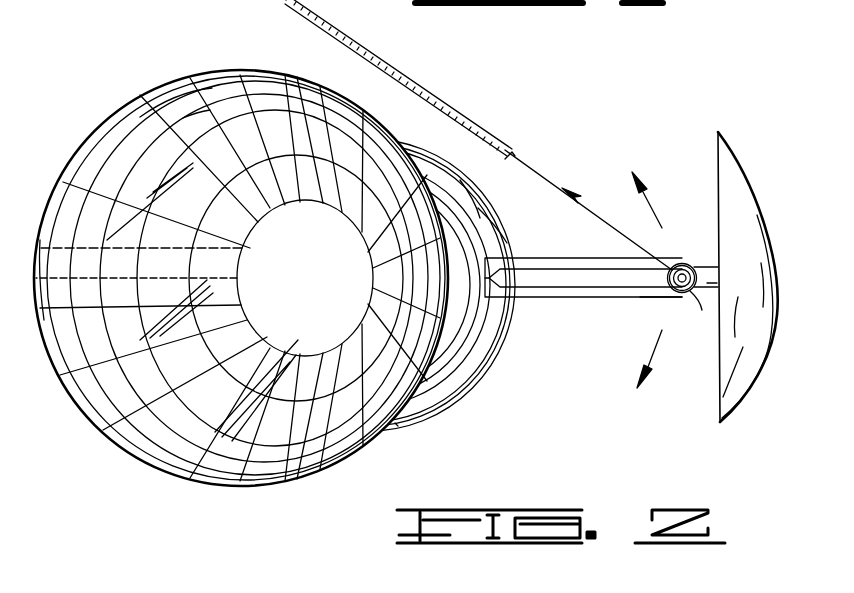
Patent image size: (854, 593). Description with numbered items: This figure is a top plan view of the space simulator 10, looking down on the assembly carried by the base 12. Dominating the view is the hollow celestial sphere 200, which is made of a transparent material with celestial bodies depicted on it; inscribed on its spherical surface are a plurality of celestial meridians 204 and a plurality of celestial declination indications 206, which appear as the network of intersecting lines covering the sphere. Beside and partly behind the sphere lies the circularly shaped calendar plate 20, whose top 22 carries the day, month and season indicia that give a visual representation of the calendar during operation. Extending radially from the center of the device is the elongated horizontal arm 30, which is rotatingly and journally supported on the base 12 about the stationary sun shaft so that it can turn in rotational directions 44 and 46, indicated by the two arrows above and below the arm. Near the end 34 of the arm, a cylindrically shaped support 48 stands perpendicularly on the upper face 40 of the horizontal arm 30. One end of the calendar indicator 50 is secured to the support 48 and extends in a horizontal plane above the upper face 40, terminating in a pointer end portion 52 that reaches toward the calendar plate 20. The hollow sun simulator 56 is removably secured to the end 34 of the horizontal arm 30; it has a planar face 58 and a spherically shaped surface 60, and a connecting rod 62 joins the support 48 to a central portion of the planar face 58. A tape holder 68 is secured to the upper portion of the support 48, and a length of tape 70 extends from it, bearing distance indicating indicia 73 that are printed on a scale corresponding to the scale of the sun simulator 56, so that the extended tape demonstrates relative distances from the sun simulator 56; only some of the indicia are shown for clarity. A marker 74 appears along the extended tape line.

The space simulator 10 is at (412, 430).
The base 12 is at (380, 285).
The calendar plate 20 is at (460, 223).
The top 22 is at (457, 337).
The horizontal arm 30 is at (583, 274).
The end 34 is at (692, 292).
The upper face 40 is at (560, 294).
The rotational direction 44 is at (657, 357).
The rotational direction 46 is at (651, 199).
The support 48 is at (688, 281).
The calendar indicator 50 is at (573, 276).
The pointer end portion 52 is at (498, 258).
The sun simulator 56 is at (725, 274).
The planar face 58 is at (715, 146).
The spherically shaped surface 60 is at (762, 368).
The connecting rod 62 is at (707, 273).
The tape holder 68 is at (679, 298).
The tape 70 is at (588, 205).
The distance indicating indicia 73 is at (376, 54).
The marker 74 is at (591, 208).
The celestial sphere 200 is at (241, 265).
The celestial meridians 204 is at (285, 434).
The celestial declination indications 206 is at (165, 432).